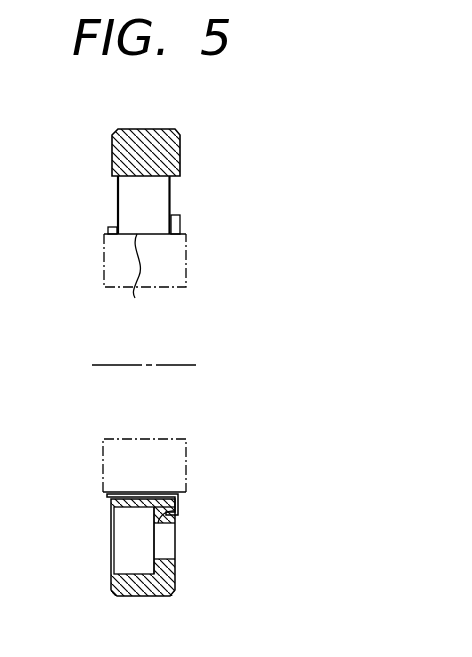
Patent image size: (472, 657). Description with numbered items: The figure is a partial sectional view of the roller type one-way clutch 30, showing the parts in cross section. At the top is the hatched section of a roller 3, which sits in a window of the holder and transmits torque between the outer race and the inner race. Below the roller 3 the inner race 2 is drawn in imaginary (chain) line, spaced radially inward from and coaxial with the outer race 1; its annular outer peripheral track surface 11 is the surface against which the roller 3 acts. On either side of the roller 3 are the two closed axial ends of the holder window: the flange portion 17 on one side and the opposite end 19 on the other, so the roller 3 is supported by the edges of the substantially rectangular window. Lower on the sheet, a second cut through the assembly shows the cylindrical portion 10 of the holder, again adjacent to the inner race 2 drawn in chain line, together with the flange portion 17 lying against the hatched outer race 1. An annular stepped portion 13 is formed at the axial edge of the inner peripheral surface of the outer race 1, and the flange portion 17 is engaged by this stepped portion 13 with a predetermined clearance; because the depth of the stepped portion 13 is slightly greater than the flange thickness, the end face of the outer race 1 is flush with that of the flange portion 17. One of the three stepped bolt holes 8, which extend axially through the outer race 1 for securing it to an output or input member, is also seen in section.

The roller type one-way clutch 30 is at (200, 135).
The outer race 1 is at (130, 143).
The roller 3 is at (124, 193).
The end 19 is at (108, 230).
The flange portion 17 is at (180, 220).
The inner race 2 is at (178, 265).
The outer peripheral track surface 11 is at (137, 281).
The cylindrical portion 10 is at (137, 492).
The annular stepped portion 13 is at (160, 520).
The stepped bolt hole 8 is at (173, 553).